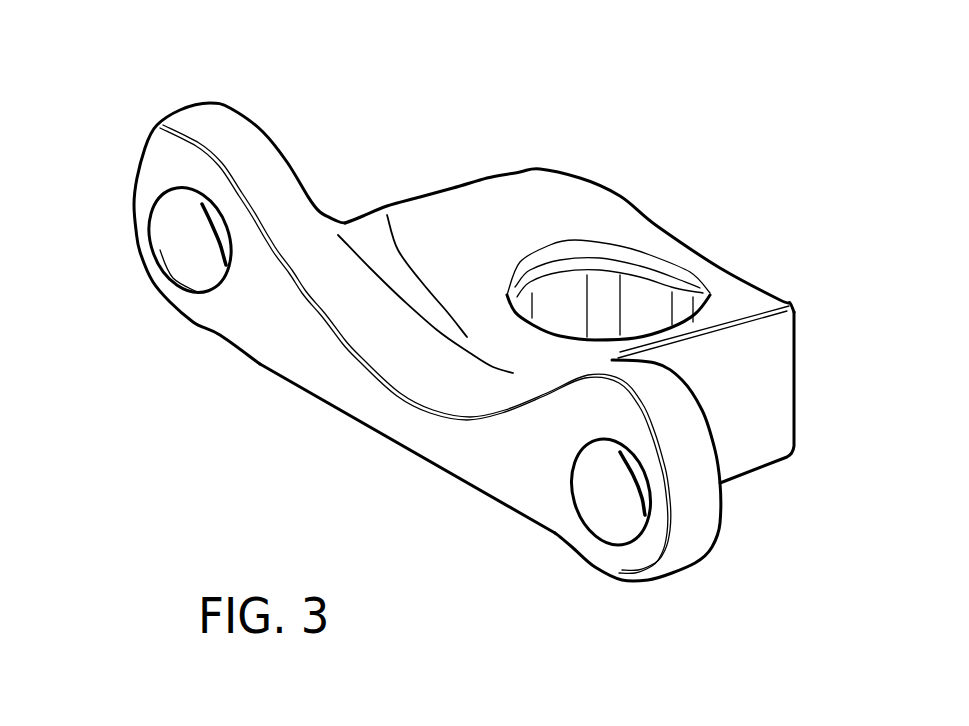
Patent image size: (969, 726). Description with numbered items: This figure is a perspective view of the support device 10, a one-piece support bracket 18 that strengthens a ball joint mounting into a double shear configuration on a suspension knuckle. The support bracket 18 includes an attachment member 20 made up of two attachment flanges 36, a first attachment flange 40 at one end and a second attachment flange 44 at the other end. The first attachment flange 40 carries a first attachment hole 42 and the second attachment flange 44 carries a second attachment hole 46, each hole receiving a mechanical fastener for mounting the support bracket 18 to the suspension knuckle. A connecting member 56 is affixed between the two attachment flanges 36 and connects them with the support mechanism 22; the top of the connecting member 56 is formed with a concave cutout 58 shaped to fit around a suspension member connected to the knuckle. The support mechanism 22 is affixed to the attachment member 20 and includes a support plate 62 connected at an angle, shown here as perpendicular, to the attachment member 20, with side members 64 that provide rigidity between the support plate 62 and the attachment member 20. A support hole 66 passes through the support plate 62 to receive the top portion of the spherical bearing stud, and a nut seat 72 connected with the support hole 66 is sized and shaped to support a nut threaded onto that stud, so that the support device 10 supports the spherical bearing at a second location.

The support device 10 is at (645, 55).
The support bracket 18 is at (421, 210).
The attachment member 20 is at (415, 390).
The attachment flange 36 is at (120, 320).
The support mechanism 22 is at (822, 288).
The first attachment flange 40 is at (683, 540).
The first attachment hole 42 is at (615, 515).
The second attachment flange 44 is at (150, 167).
The second attachment hole 46 is at (173, 227).
The connecting member 56 is at (280, 408).
The cutout 58 is at (398, 347).
The support plate 62 is at (608, 210).
The side members 64 is at (474, 176).
The support hole 66 is at (537, 215).
The nut seat 72 is at (668, 245).